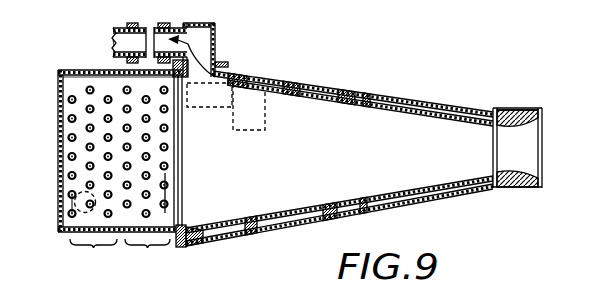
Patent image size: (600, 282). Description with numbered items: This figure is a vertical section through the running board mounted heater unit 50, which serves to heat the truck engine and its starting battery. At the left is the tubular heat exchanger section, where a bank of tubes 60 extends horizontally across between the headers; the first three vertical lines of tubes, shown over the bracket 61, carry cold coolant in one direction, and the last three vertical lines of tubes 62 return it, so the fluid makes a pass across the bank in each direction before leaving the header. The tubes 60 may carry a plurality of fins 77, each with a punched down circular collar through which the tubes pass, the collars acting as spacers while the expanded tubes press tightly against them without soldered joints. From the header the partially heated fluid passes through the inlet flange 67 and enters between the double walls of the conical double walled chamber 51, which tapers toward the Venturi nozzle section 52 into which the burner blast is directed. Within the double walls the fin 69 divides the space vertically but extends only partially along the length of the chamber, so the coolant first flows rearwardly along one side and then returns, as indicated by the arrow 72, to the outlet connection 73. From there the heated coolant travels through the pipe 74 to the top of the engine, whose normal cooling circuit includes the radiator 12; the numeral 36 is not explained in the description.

The supply conduit 36 is at (88, 23).
The pipe 74 is at (152, 23).
The outlet connection 73 is at (216, 35).
The arrow 72 is at (216, 48).
The inlet flange 67 is at (264, 77).
The fin 69 is at (323, 88).
The heater unit 50 is at (339, 144).
The conical double walled chamber 51 is at (431, 100).
The Venturi nozzle section 52 is at (517, 127).
The fins 77 is at (66, 88).
The tubes 60 is at (66, 156).
The radiator 12 is at (167, 213).
The bracket 61 is at (93, 253).
The vertical lines of tubes 62 is at (147, 253).